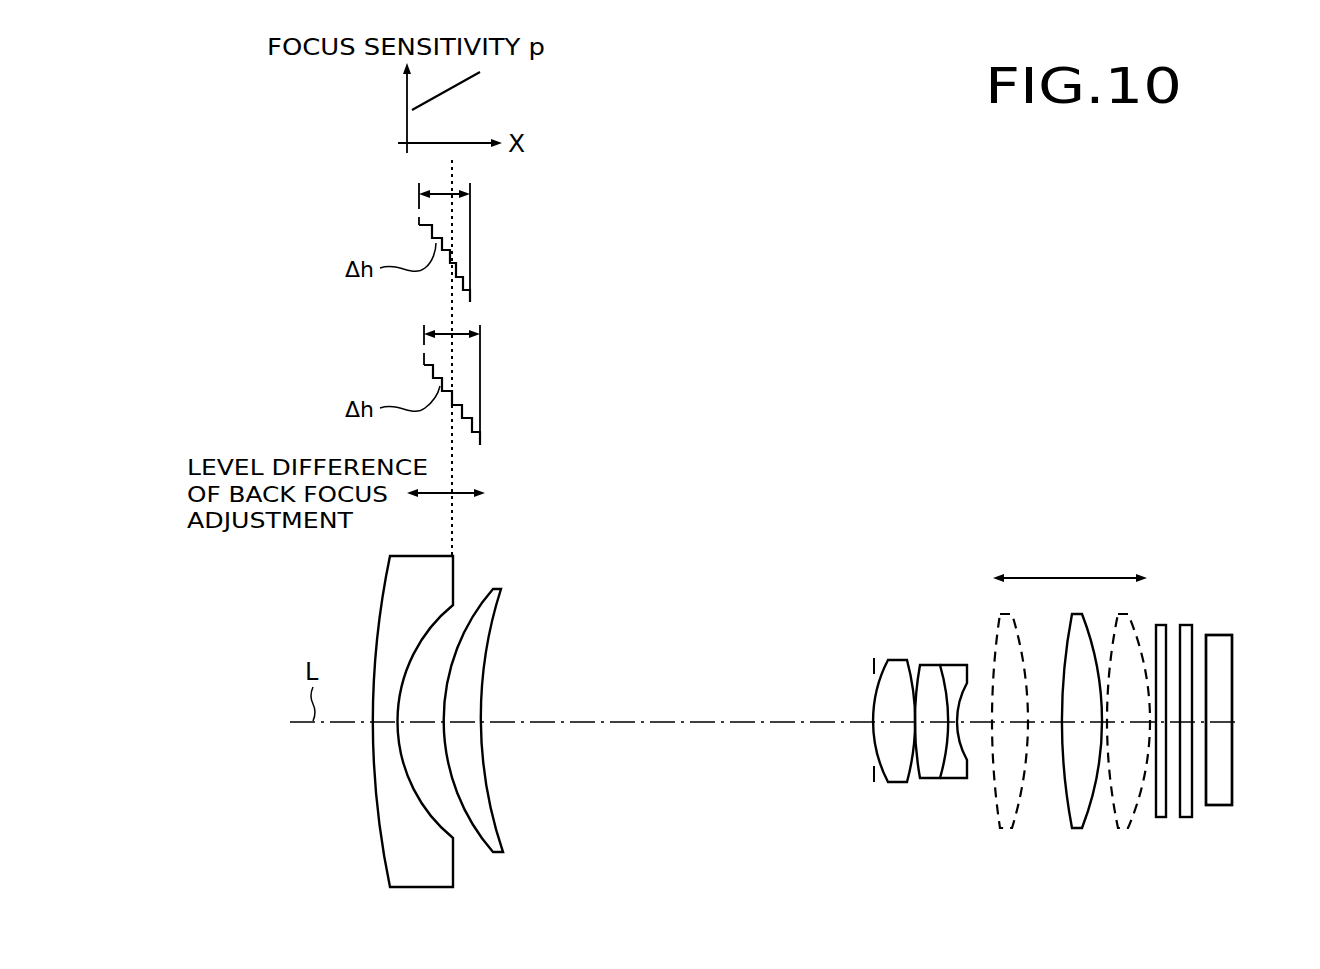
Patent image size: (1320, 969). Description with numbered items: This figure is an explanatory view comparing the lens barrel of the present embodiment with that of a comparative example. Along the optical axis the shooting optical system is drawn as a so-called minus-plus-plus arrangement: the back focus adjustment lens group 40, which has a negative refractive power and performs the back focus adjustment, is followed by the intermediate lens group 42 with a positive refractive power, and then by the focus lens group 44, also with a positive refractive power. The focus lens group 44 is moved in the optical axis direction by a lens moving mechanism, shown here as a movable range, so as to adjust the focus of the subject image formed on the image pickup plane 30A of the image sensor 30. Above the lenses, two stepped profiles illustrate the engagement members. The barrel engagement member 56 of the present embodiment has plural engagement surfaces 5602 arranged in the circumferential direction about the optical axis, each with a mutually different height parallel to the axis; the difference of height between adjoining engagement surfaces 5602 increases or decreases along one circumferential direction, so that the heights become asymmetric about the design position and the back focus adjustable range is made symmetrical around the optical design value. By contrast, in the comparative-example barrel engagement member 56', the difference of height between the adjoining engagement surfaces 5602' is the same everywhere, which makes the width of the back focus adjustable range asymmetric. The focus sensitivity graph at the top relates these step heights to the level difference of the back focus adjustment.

The barrel engagement member 56 is at (497, 242).
The barrel engagement member of the comparative example 56' is at (503, 385).
The engagement surfaces 5602 is at (395, 262).
The engagement surfaces of the comparative example 5602' is at (396, 402).
The back focus adjustment lens group 40 is at (344, 817).
The intermediate lens group 42 is at (922, 804).
The focus lens group 44 is at (1077, 830).
The image sensor 30 is at (1200, 650).
The image pickup plane 30A is at (1219, 720).